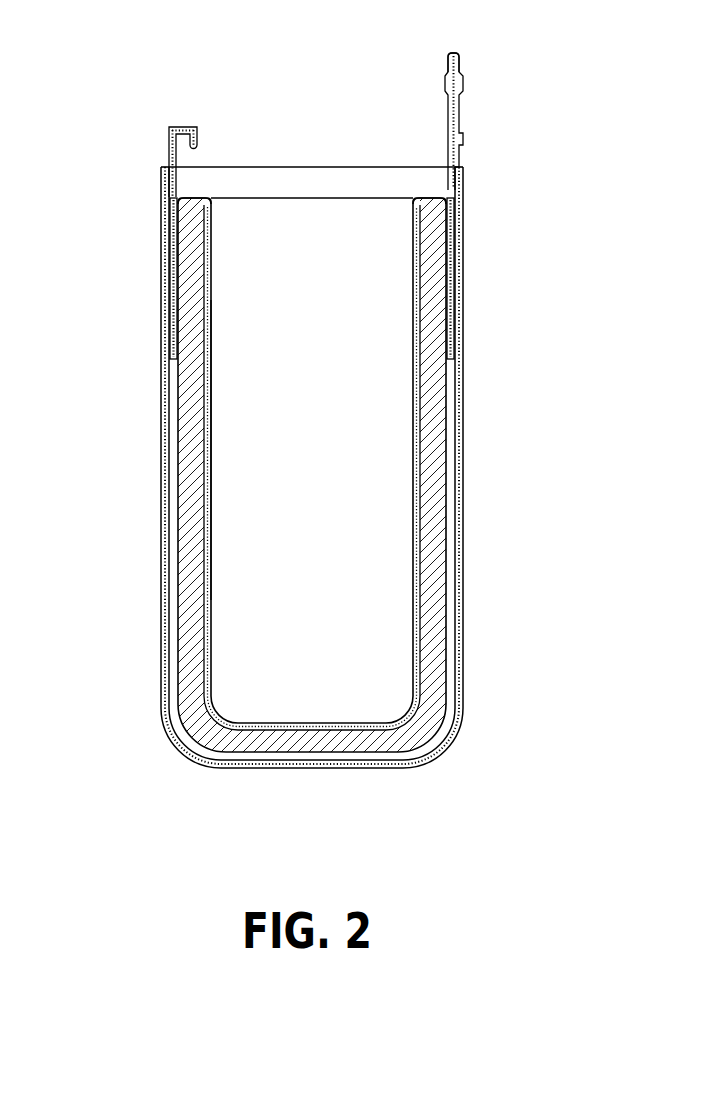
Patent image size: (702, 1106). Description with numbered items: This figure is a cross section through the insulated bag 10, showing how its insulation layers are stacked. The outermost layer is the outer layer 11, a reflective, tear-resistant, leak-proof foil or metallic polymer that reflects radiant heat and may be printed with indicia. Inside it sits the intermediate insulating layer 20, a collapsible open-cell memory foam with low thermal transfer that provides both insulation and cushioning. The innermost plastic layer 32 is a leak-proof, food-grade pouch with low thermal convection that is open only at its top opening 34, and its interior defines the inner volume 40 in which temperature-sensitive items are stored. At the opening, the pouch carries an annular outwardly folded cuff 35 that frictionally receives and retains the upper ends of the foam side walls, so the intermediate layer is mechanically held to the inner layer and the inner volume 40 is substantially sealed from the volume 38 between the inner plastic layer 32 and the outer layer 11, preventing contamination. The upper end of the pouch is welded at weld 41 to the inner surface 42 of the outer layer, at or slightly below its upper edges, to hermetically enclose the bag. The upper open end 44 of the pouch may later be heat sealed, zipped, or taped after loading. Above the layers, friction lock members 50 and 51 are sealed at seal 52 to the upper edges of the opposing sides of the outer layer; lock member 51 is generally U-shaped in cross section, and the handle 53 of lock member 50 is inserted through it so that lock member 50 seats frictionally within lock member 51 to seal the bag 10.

The insulated bag 10 is at (140, 598).
The outer layer 11 is at (164, 453).
The intermediate insulating layer 20 is at (187, 403).
The inner plastic layer 32 is at (228, 572).
The top opening 34 is at (305, 208).
The outwardly folded cuff 35 is at (172, 313).
The volume between inner and outer layers 38 is at (218, 735).
The inner volume 40 is at (310, 466).
The weld 41 is at (177, 207).
The inner surface of the outer layer 42 is at (188, 196).
The upper open end 44 is at (318, 198).
The friction lock member 50 is at (463, 140).
The friction lock member 51 is at (168, 130).
The seal 52 is at (165, 173).
The handle 53 is at (460, 63).